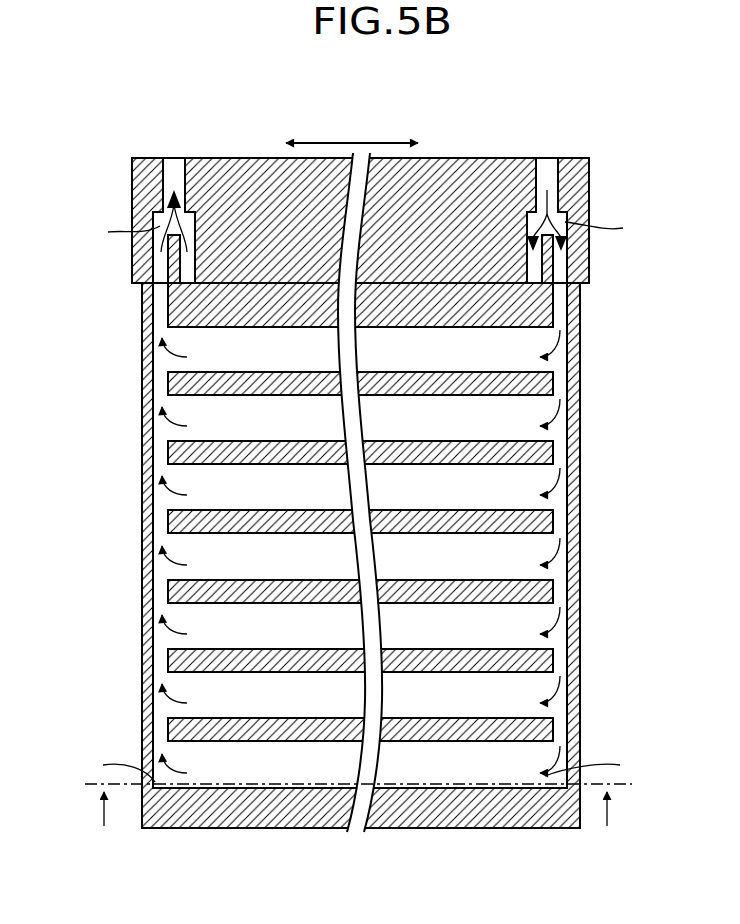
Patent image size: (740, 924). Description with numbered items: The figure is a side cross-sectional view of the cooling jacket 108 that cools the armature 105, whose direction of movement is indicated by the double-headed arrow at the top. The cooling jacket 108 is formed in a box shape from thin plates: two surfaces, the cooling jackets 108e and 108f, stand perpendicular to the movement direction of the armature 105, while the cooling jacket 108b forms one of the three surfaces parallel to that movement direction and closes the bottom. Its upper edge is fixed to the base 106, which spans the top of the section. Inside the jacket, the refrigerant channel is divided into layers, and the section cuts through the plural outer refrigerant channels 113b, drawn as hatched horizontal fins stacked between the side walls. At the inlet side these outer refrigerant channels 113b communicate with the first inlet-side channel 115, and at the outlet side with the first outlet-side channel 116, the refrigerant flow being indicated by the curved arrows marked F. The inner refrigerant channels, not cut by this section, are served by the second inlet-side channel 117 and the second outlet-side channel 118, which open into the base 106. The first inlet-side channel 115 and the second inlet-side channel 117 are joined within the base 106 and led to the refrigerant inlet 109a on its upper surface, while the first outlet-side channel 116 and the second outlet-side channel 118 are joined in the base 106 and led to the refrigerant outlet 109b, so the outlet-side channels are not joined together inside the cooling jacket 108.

The armature 105 is at (467, 127).
The base 106 is at (590, 192).
The cooling jacket 108 is at (358, 590).
The cooling jacket (bottom surface) 108b is at (257, 830).
The cooling jacket (side surface) 108e is at (580, 410).
The cooling jacket (side surface) 108f is at (140, 533).
The refrigerant inlet 109a is at (550, 158).
The refrigerant outlet 109b is at (172, 158).
The outer refrigerant channels 113b is at (477, 352).
The first inlet-side channel 115 is at (580, 305).
The first outlet-side channel 116 is at (158, 305).
The second inlet-side channel 117 is at (562, 268).
The second outlet-side channel 118 is at (157, 272).